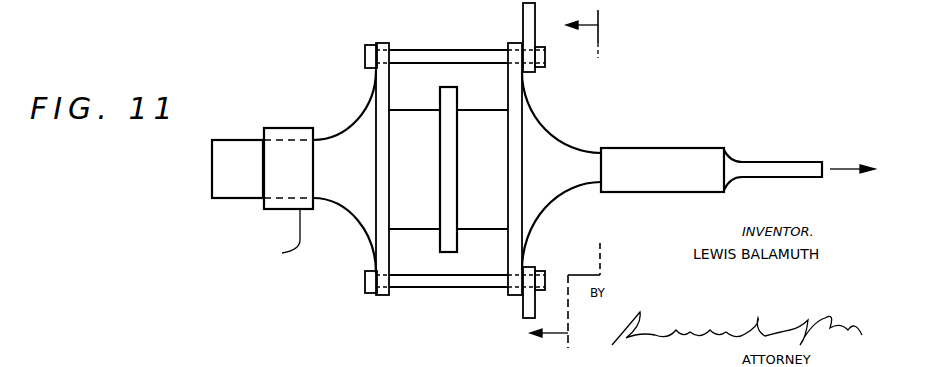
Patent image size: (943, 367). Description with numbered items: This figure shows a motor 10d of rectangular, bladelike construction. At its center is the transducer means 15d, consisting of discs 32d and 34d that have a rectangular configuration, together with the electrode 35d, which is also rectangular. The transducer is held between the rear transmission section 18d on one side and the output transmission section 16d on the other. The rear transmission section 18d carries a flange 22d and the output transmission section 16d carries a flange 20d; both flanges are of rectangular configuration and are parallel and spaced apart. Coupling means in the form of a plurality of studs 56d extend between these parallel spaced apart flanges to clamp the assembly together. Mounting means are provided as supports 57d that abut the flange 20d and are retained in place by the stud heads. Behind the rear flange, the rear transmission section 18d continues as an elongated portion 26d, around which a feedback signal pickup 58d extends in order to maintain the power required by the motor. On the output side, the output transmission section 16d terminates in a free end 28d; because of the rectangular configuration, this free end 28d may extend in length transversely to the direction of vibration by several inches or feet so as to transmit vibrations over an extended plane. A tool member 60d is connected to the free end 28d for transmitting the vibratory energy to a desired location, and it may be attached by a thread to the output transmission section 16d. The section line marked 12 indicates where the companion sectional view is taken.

The elongated portion 26d is at (229, 154).
The feedback signal pickup 58d is at (293, 128).
The rear transmission section 18d is at (352, 122).
The flange 22d is at (385, 298).
The flange 20d is at (580, 150).
The supports 57d is at (525, 7).
The studs 56d is at (460, 50).
The disc 34d is at (408, 118).
The disc 32d is at (477, 117).
The transducer means 15d is at (402, 238).
The electrode 35d is at (457, 243).
The motor 10d is at (558, 118).
The output transmission section 16d is at (561, 226).
The free end 28d is at (662, 186).
The tool member 60d is at (702, 148).
The section line 12 is at (563, 183).